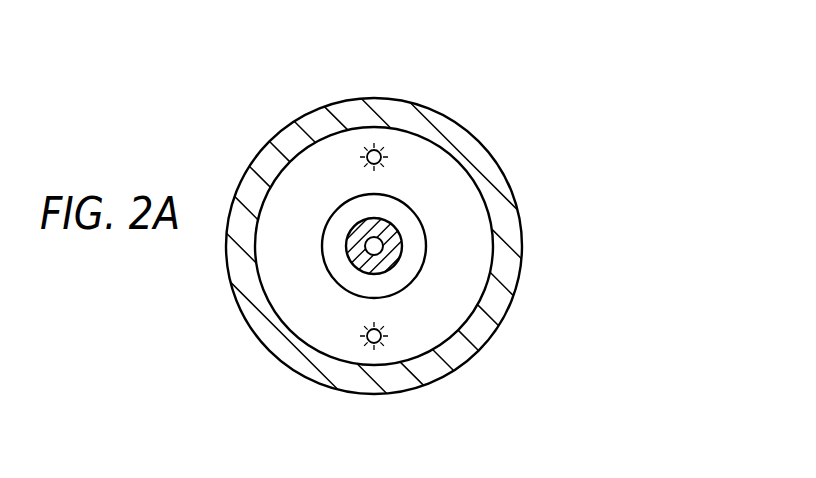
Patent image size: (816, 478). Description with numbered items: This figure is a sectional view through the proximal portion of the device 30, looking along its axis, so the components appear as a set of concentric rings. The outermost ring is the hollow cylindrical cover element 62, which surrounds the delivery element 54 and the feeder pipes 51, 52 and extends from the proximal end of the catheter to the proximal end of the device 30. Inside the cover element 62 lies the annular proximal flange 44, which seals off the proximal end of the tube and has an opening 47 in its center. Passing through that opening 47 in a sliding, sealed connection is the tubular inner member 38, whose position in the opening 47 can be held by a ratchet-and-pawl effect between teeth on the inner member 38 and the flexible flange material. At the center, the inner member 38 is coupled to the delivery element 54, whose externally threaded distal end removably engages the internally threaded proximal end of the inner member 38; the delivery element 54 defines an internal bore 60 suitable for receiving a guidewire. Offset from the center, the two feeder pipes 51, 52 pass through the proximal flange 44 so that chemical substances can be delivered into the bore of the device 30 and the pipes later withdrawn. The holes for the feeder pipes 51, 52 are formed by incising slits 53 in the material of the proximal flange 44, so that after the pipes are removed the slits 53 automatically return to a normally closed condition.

The device 30 is at (602, 118).
The cover element 62 is at (468, 136).
The proximal flange 44 is at (298, 297).
The opening 47 is at (394, 203).
The inner member 38 is at (337, 238).
The delivery element 54 is at (397, 262).
The internal bore 60 is at (380, 244).
The feeder pipe 51 is at (386, 156).
The feeder pipe 52 is at (363, 338).
The slits 53 is at (362, 158).